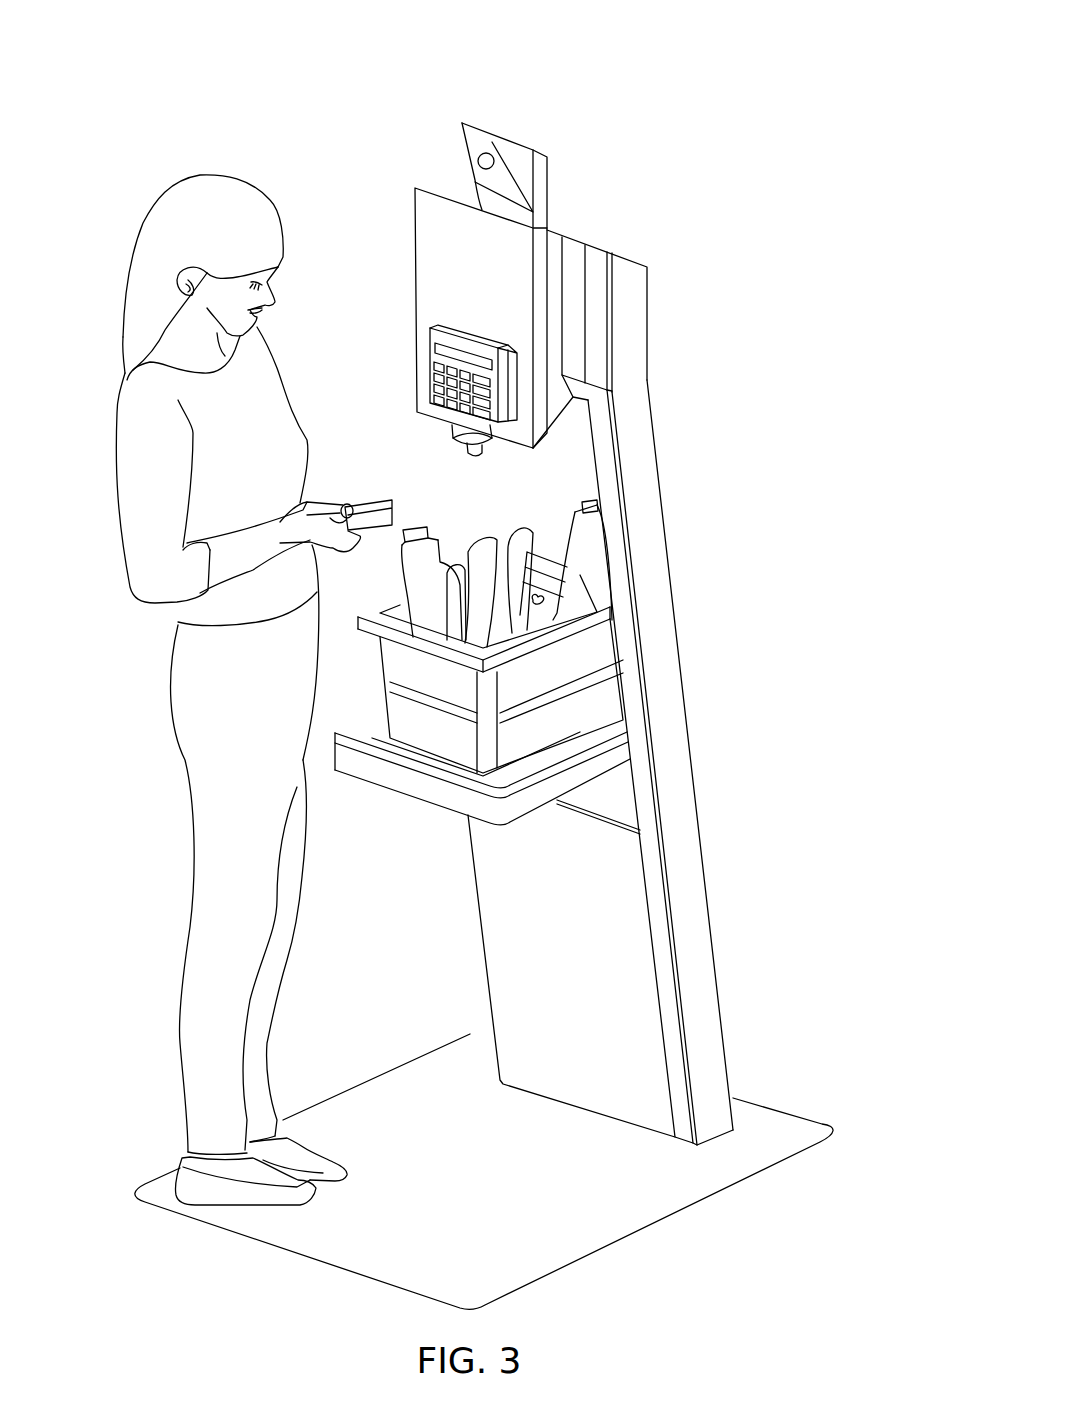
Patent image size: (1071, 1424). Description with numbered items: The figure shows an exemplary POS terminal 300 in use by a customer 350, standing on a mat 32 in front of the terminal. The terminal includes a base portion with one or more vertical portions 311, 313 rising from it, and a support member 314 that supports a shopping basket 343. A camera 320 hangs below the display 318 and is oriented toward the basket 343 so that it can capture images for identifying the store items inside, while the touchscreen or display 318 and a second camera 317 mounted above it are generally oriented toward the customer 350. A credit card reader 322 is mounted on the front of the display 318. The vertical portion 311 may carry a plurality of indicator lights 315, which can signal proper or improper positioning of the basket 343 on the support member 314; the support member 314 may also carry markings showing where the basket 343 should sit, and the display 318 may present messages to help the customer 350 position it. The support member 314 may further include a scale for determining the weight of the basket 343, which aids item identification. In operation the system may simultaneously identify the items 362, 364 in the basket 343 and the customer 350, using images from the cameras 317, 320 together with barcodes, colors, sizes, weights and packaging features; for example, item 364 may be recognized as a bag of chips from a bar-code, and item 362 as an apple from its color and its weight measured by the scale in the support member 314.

The POS terminal 300 is at (722, 53).
The floor mat 32 is at (638, 1200).
The vertical portion 311 is at (672, 592).
The vertical portion 313 is at (523, 922).
The support member 314 is at (350, 717).
The indicator lights 315 is at (597, 313).
The camera 317 is at (473, 150).
The display 318 is at (415, 309).
The camera 320 is at (472, 458).
The credit card reader 322 is at (472, 340).
The shopping basket 343 is at (390, 612).
The customer 350 is at (182, 172).
The item 362 is at (532, 590).
The item 364 is at (488, 543).